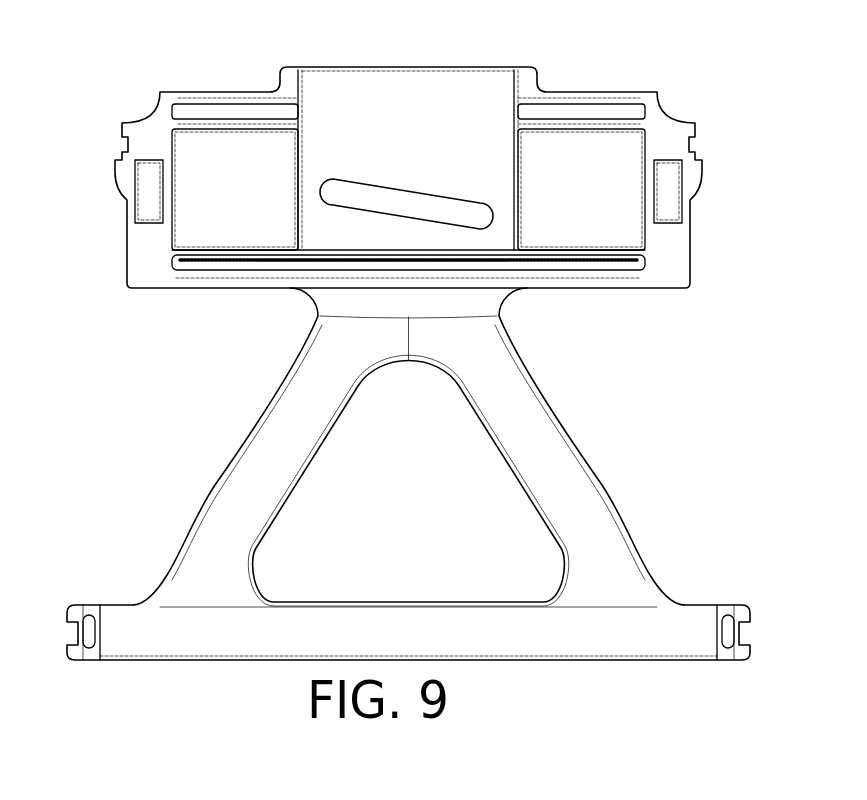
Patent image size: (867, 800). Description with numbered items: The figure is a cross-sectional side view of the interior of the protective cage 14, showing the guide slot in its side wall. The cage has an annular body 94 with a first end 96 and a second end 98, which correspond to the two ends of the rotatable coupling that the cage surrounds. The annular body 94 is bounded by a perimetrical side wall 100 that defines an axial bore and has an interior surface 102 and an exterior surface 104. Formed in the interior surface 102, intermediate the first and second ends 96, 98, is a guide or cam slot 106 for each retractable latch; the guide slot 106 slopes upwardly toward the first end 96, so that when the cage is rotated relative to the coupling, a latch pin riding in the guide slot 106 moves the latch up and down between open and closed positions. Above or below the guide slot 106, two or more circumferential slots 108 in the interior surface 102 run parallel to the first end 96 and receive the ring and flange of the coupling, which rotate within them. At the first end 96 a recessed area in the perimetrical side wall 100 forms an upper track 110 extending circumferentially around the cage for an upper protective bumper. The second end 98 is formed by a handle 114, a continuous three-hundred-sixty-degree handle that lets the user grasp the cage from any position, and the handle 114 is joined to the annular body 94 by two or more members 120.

The protective cage 14 is at (686, 64).
The annular body 94 is at (623, 232).
The first end 96 is at (592, 92).
The second end 98 is at (609, 290).
The perimetrical side wall 100 is at (140, 268).
The interior surface 102 is at (206, 205).
The exterior surface 104 is at (693, 218).
The guide slot 106 is at (392, 190).
The circumferential slots 108 is at (228, 113).
The upper track 110 is at (127, 148).
The handle 114 is at (140, 642).
The members 120 is at (217, 488).